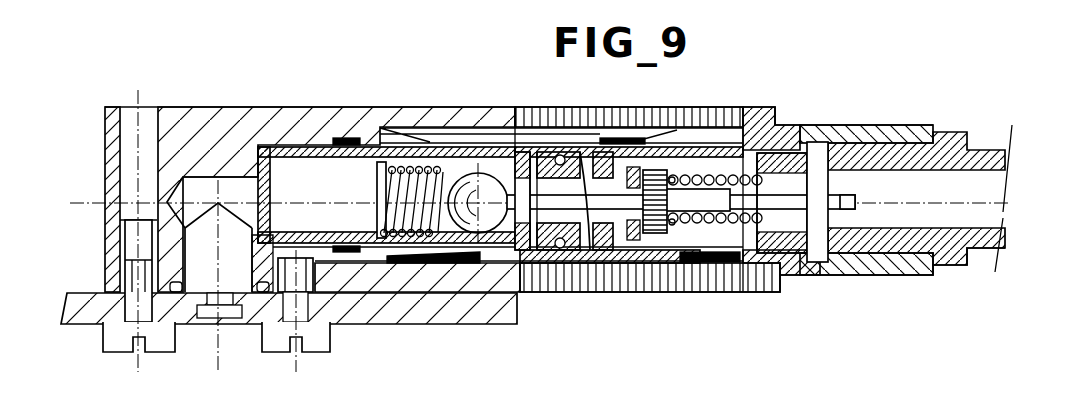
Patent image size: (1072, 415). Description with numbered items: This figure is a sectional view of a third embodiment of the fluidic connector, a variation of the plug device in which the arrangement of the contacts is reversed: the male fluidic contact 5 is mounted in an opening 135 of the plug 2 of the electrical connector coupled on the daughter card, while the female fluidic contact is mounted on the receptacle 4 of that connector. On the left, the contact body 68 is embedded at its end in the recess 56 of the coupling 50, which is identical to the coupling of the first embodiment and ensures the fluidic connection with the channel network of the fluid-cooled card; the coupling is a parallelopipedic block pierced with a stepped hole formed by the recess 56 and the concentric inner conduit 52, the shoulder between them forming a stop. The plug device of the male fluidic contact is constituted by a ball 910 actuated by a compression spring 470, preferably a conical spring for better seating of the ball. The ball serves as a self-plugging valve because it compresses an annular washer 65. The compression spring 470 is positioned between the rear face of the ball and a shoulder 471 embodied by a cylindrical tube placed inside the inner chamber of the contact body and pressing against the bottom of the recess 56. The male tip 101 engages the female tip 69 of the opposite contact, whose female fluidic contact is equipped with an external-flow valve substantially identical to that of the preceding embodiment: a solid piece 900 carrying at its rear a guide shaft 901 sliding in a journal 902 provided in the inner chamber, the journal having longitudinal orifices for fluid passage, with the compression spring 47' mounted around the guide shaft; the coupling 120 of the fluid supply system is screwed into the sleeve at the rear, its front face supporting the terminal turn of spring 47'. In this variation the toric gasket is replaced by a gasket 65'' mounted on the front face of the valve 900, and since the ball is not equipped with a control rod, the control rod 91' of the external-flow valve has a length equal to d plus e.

The plug 2 is at (460, 100).
The receptacle 4 is at (653, 96).
The male fluidic contact 5 is at (797, 127).
The coupling 50 is at (237, 118).
The inner conduit 52 is at (197, 187).
The recess 56 is at (270, 148).
The contact body 68 is at (333, 148).
The female tip 69 is at (577, 250).
The annular washer 65 is at (527, 243).
The gasket 65'' is at (612, 242).
The male tip 101 is at (551, 262).
The coupling 120 is at (952, 265).
The opening 135 is at (483, 130).
The compression spring 470 is at (368, 240).
The shoulder 471 is at (378, 170).
The compression spring 47' is at (715, 254).
The solid piece 900 is at (663, 250).
The guide shaft 901 is at (855, 196).
The journal 902 is at (788, 233).
The ball 910 is at (455, 235).
The control rod 91' is at (681, 143).